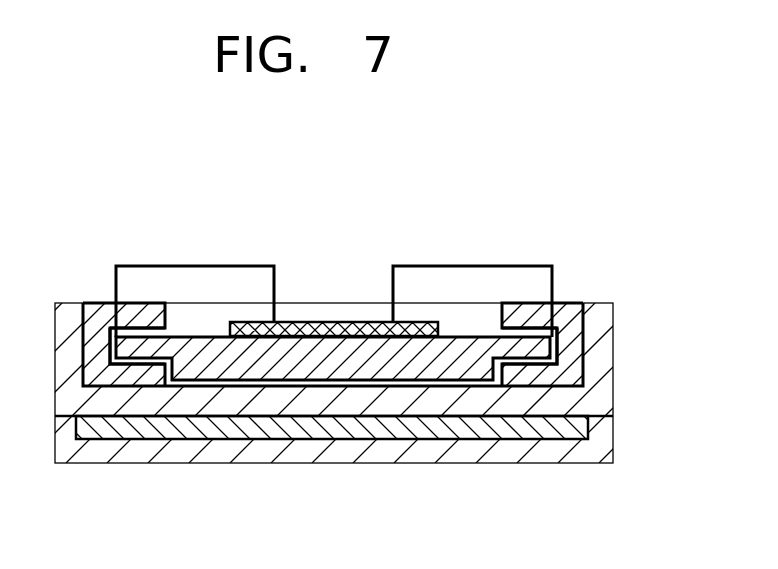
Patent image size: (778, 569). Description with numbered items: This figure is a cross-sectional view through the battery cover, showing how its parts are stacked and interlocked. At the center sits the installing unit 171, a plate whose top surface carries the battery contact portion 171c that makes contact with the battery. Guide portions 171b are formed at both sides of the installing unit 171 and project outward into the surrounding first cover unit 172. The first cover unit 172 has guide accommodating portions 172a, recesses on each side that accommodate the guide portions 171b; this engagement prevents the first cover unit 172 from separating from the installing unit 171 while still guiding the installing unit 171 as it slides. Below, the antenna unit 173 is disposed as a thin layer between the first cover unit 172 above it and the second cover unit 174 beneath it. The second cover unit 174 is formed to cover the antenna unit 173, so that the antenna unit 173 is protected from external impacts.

The installing unit 171 is at (338, 350).
The guide portions 171b is at (137, 347).
The battery contact portion 171c is at (301, 322).
The first cover unit 172 is at (598, 362).
The guide accommodating portions 172a is at (143, 330).
The antenna unit 173 is at (268, 423).
The second cover unit 174 is at (343, 450).